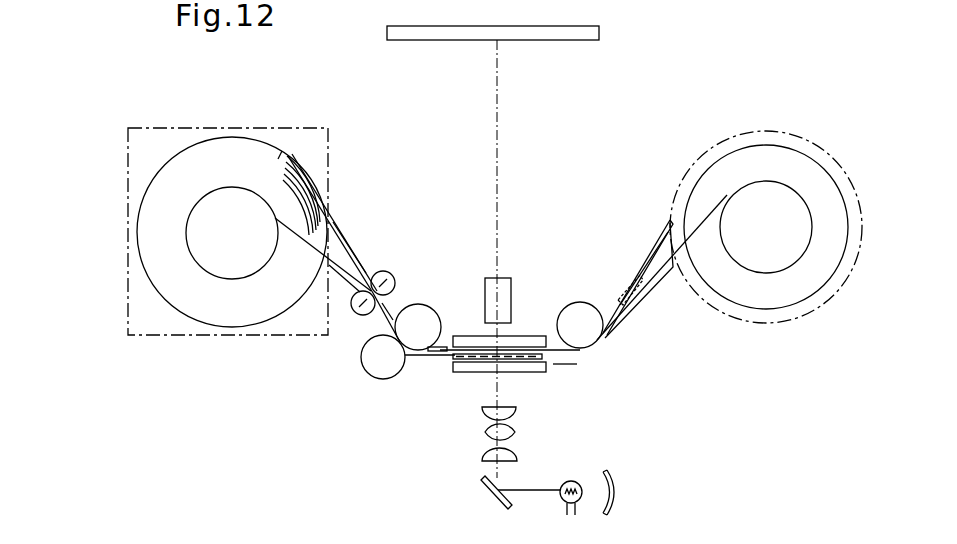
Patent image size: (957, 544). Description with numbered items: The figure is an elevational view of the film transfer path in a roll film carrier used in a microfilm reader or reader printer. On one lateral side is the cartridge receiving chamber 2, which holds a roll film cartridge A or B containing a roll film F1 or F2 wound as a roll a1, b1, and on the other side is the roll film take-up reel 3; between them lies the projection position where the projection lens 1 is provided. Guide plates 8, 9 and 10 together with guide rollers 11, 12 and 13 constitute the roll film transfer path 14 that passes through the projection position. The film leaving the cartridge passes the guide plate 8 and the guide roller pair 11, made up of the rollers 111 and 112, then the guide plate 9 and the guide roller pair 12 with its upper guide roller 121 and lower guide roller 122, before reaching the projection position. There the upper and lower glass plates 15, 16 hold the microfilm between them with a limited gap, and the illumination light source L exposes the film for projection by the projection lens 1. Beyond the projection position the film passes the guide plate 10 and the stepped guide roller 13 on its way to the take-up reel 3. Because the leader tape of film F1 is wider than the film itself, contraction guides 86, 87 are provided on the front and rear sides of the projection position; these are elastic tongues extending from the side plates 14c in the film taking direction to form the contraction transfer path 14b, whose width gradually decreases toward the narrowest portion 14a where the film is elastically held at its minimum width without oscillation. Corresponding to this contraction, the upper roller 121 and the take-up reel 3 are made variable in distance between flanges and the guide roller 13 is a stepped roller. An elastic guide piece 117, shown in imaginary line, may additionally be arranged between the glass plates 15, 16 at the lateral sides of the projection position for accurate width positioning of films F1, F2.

The projection lens 1 is at (510, 287).
The cartridge receiving chamber 2 is at (128, 180).
The roll film take-up reel 3 is at (713, 145).
The guide plate 8 is at (345, 283).
The guide plate 9 is at (380, 328).
The guide plate 10 is at (613, 337).
The guide roller 11 is at (405, 280).
The guide roller 111 is at (379, 273).
The guide roller 112 is at (388, 281).
The guide roller pair 12 is at (382, 341).
The upper guide roller 121 is at (422, 313).
The lower guide roller 122 is at (380, 367).
The guide roller 13 is at (588, 310).
The roll film transfer path 14 is at (352, 247).
The narrowest portion of the transfer path 14a is at (437, 358).
The contraction transfer path 14b is at (632, 320).
The side plates 14c is at (427, 345).
The upper glass plate 15 is at (522, 338).
The lower glass plate 16 is at (533, 367).
The elastic guide piece 117 is at (487, 363).
The contraction guide 86 is at (440, 362).
The contraction guide 87 is at (657, 255).
The film roll a1 is at (229, 210).
The film roll core b1 is at (232, 233).
The roll film cartridge A is at (238, 213).
The roll film cartridge B is at (268, 128).
The roll film F1 is at (335, 223).
The roll film F2 is at (327, 213).
The illumination light source L is at (582, 482).